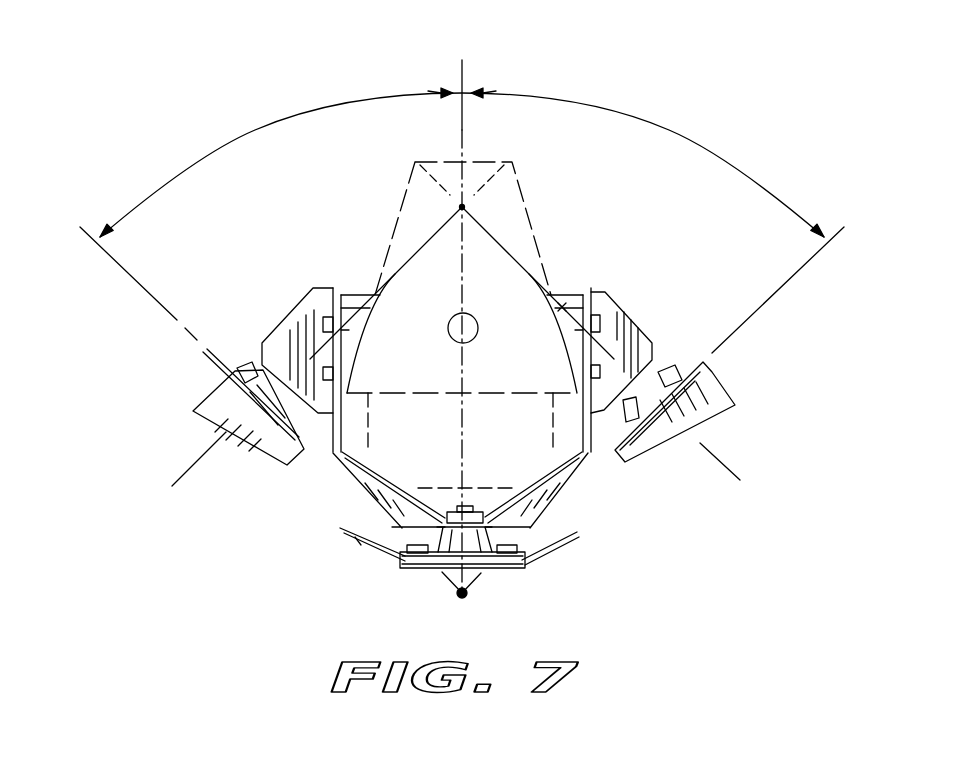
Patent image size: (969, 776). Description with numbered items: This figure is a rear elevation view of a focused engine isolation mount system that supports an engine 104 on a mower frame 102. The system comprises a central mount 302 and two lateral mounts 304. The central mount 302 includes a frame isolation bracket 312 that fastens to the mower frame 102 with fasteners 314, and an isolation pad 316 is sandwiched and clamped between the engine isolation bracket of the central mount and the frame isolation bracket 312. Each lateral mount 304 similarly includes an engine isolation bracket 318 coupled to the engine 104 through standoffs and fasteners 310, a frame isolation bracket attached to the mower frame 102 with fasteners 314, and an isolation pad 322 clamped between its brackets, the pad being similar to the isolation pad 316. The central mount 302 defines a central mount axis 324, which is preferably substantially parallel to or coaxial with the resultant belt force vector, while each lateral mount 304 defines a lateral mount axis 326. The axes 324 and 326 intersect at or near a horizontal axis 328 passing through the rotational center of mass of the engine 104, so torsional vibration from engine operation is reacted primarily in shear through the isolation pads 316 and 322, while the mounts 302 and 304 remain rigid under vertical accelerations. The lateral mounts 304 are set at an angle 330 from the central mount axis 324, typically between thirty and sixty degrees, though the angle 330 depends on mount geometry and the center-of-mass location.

The mower frame 102 is at (240, 443).
The engine 104 is at (500, 160).
The central mount 302 is at (395, 543).
The lateral mount 304 is at (270, 318).
The fastener 310 is at (333, 400).
The frame isolation bracket 312 is at (520, 562).
The fastener 314 is at (243, 367).
The isolation pad 316 is at (440, 572).
The engine isolation bracket 318 is at (313, 290).
The isolation pad 322 is at (230, 425).
The central mount axis 324 is at (468, 597).
The lateral mount axis 326 is at (440, 228).
The horizontal axis 328 is at (462, 207).
The angle 330 is at (256, 130).